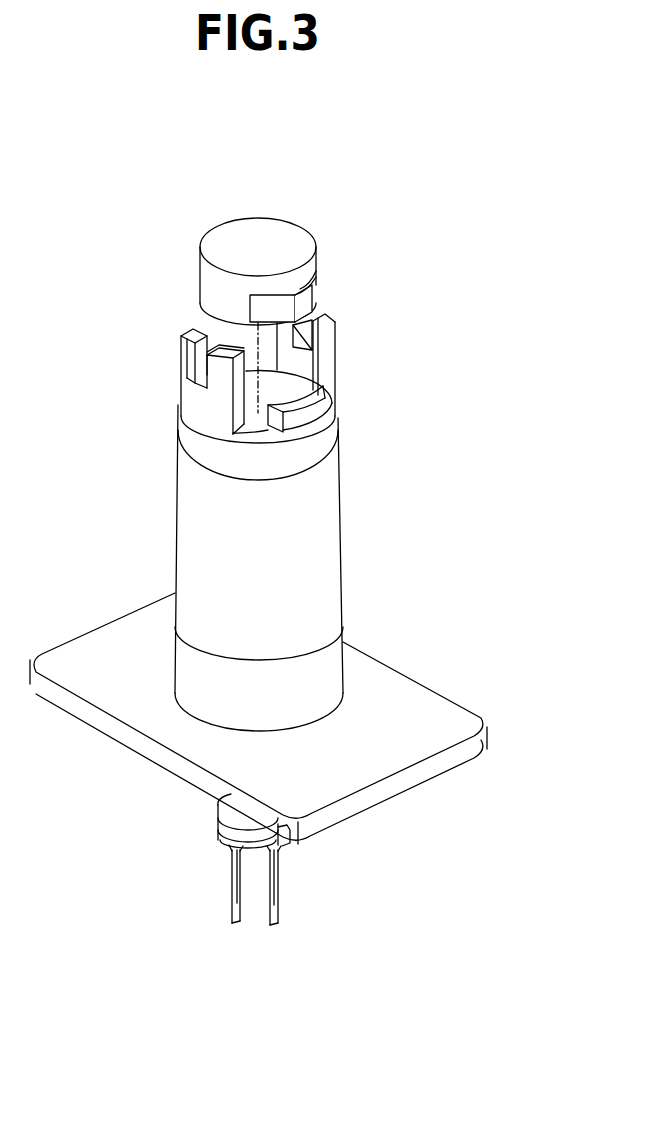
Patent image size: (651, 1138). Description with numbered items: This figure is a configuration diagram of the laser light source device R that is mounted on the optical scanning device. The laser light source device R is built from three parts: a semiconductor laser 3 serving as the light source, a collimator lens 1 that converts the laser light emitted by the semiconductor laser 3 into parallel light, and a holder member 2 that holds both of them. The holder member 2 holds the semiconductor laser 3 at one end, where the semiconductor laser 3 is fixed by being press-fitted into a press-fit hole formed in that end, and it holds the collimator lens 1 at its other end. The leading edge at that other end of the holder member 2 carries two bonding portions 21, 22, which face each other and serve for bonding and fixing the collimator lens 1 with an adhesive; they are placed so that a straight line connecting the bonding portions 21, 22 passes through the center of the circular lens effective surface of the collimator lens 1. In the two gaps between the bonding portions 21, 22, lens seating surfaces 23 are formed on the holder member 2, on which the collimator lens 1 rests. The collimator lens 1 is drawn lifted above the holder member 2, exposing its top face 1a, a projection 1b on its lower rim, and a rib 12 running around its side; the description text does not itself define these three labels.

The collimator lens 1 is at (298, 217).
The top surface of rotor 1a is at (248, 243).
The projection of rotor 1b is at (312, 298).
The engaging rib 12 is at (312, 283).
The holder member 2 is at (258, 543).
The bonding portion 21 is at (335, 316).
The bonding portion 22 is at (183, 363).
The lens seating surface 23 is at (226, 347).
The semiconductor laser 3 is at (220, 837).
The laser light source device R is at (392, 521).